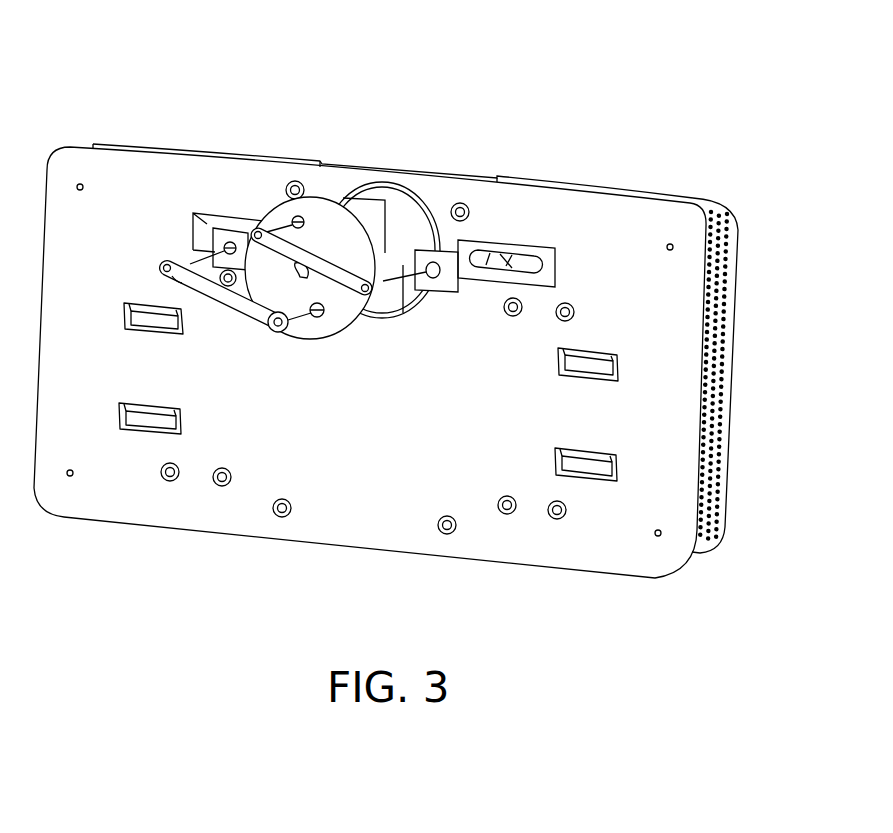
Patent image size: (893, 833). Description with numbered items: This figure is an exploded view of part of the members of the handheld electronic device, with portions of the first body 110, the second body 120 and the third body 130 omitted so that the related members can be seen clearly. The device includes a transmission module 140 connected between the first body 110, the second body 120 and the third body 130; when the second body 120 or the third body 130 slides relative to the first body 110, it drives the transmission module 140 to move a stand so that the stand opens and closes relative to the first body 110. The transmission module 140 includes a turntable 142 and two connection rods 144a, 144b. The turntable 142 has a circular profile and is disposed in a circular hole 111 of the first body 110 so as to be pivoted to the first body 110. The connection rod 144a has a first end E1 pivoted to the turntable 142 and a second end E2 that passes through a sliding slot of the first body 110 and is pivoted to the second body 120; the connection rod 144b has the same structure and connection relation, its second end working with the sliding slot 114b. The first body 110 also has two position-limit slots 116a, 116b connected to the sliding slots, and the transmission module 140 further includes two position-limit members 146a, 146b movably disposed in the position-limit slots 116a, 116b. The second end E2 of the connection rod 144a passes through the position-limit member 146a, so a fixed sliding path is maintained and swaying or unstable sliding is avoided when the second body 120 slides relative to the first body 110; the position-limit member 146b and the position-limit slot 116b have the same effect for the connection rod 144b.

The first body 110 is at (102, 502).
The circular hole 111 is at (389, 313).
The sliding slot 114b is at (532, 262).
The position-limit slot 116a is at (193, 229).
The position-limit slot 116b is at (542, 252).
The second body 120 is at (113, 143).
The third body 130 is at (715, 202).
The transmission module 140 is at (342, 173).
The turntable 142 is at (330, 268).
The connection rod 144a is at (190, 278).
The connection rod 144b is at (383, 252).
The position-limit member 146a is at (226, 232).
The position-limit member 146b is at (451, 178).
The first end E1 is at (279, 351).
The second end E2 is at (147, 276).